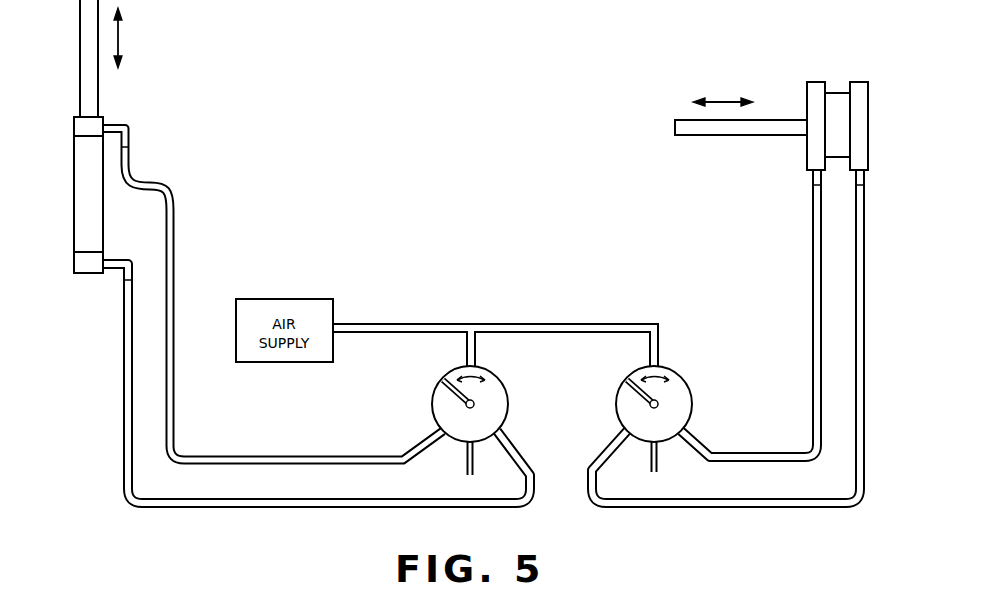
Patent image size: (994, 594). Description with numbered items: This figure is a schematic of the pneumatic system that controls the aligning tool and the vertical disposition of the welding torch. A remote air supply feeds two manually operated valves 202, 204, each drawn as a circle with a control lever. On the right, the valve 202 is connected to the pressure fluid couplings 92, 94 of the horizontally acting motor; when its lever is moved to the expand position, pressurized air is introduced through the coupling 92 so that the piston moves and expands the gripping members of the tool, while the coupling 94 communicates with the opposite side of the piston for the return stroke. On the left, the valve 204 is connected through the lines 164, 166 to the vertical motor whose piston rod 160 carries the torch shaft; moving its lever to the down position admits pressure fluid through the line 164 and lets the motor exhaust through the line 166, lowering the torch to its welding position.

The piston rod 160 is at (72, 197).
The line 164 is at (117, 124).
The line 166 is at (117, 274).
The valve 204 is at (433, 402).
The valve 202 is at (685, 378).
The pressure fluid coupling 92 is at (812, 175).
The pressure fluid coupling 94 is at (867, 175).